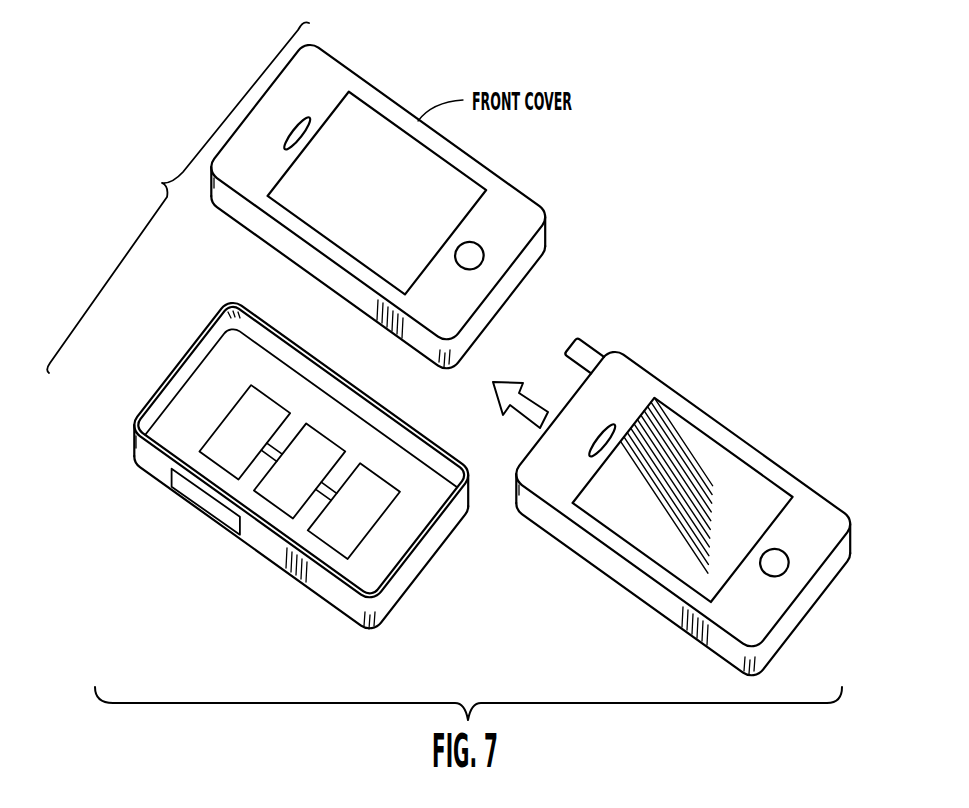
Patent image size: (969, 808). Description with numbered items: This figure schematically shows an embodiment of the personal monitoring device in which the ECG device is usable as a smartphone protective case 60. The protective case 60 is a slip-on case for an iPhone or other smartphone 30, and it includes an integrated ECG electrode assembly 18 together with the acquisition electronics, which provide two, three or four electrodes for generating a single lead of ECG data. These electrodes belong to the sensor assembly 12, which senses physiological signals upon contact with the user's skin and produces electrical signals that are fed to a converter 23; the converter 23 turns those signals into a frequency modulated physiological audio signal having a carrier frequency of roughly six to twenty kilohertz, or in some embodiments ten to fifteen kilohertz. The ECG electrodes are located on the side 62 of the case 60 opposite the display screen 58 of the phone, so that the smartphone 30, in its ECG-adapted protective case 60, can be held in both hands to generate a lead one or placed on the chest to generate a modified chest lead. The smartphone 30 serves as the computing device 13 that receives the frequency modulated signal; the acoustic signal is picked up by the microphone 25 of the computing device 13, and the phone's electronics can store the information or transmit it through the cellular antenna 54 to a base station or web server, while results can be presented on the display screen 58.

The protective case 60 is at (178, 197).
The sensor assembly 12 is at (290, 485).
The electrode assembly 18 is at (238, 408).
The converter 23 is at (281, 498).
The side of the case 62 is at (241, 543).
The computing device 13 is at (683, 487).
The smartphone 30 is at (672, 617).
The cellular antenna 54 is at (589, 347).
The display screen 58 is at (690, 447).
The microphone 25 is at (777, 565).